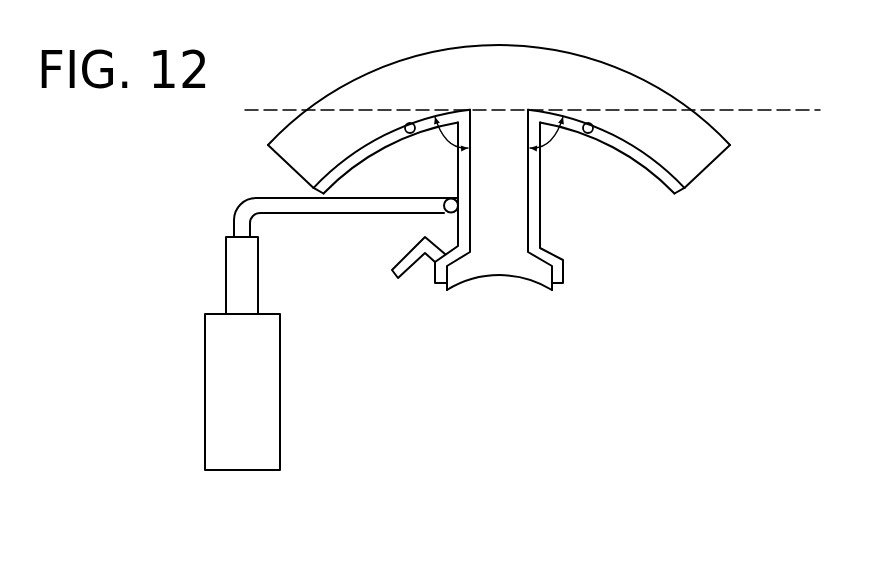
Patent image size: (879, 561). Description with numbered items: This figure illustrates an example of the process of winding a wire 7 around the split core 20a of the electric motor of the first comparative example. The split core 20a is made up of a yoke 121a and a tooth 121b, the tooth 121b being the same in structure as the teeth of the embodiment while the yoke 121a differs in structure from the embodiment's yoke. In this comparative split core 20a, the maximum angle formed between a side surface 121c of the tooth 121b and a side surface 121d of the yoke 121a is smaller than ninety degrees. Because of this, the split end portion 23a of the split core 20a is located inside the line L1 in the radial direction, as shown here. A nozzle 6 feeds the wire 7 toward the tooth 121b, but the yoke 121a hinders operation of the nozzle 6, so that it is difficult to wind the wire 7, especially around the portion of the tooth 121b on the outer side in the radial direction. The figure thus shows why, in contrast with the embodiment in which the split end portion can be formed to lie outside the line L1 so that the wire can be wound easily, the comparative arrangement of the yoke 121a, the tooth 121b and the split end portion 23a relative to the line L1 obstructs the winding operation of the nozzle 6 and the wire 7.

The nozzle 6 is at (222, 387).
The wire 7 is at (338, 205).
The split core 20a is at (285, 60).
The split end portion 23a is at (308, 189).
The yoke 121a is at (502, 77).
The tooth 121b is at (503, 220).
The side surface of the tooth 121c is at (530, 205).
The side surface of the yoke 121d is at (406, 126).
The line L1 is at (770, 112).